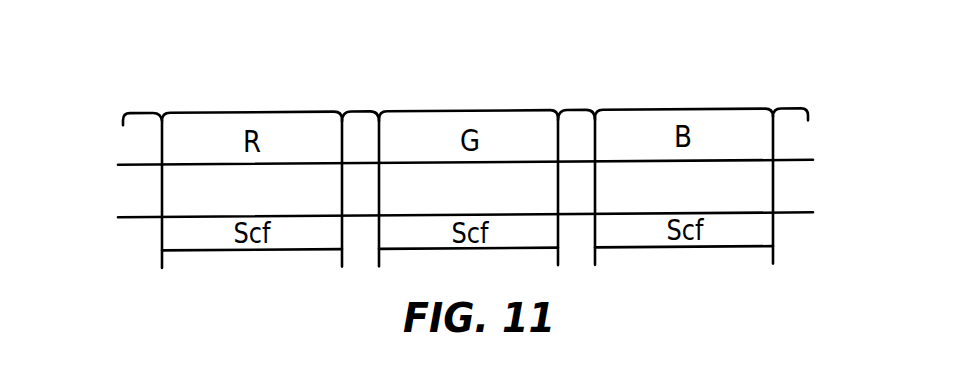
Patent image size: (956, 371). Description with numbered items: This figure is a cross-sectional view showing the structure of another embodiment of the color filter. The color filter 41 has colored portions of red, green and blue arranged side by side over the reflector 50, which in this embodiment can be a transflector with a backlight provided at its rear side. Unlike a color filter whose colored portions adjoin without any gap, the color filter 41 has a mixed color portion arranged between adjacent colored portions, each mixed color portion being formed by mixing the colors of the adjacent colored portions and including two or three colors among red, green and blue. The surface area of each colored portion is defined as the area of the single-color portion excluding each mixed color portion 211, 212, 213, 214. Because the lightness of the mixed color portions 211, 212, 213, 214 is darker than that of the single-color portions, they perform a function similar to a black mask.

The color filter 41 is at (130, 143).
The reflector 50 is at (130, 192).
The mixed color portion 211 is at (124, 124).
The mixed color portion 212 is at (361, 121).
The mixed color portion 213 is at (582, 118).
The mixed color portion 214 is at (808, 118).